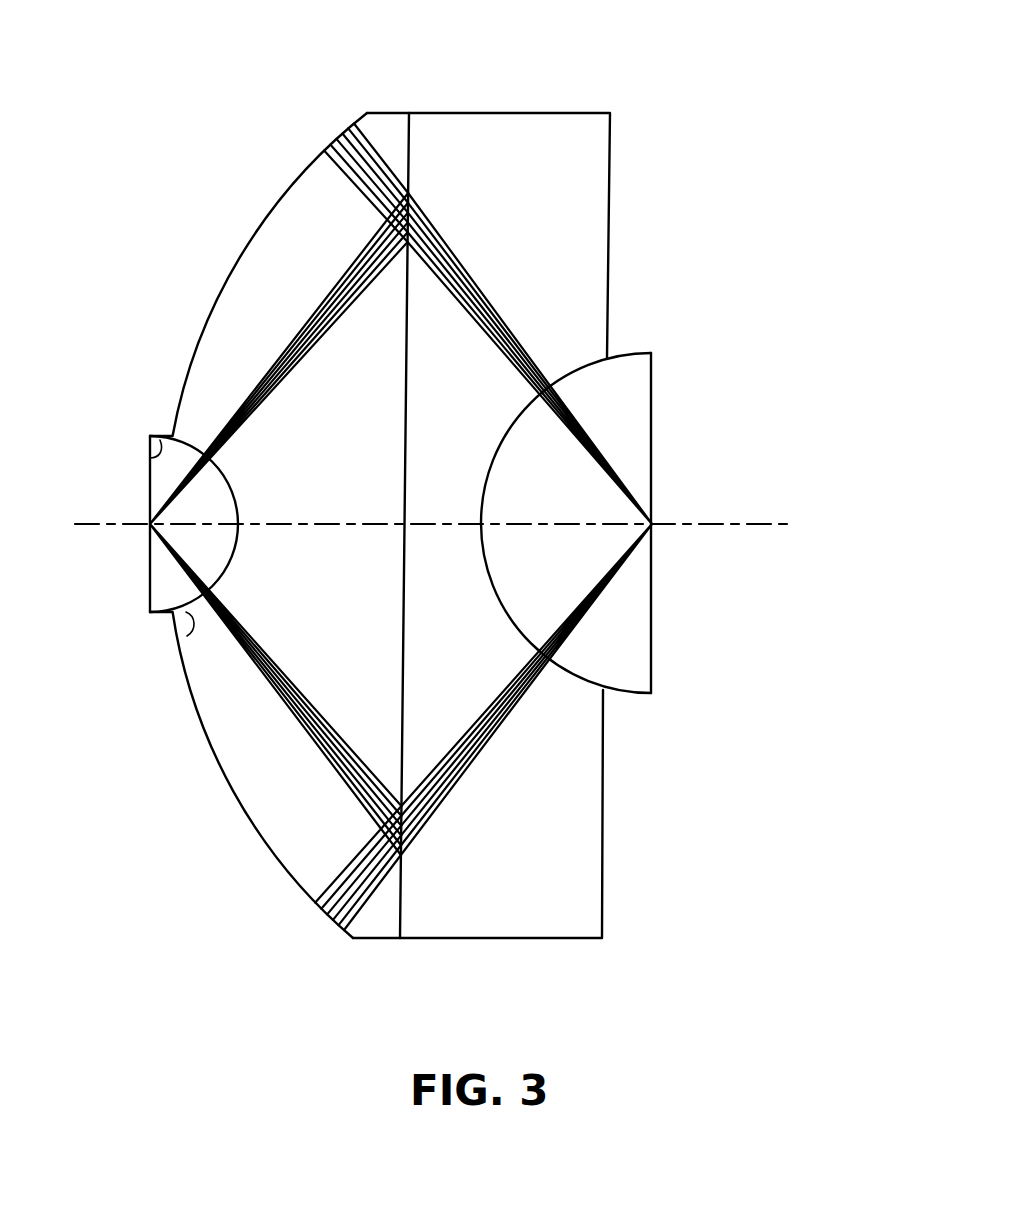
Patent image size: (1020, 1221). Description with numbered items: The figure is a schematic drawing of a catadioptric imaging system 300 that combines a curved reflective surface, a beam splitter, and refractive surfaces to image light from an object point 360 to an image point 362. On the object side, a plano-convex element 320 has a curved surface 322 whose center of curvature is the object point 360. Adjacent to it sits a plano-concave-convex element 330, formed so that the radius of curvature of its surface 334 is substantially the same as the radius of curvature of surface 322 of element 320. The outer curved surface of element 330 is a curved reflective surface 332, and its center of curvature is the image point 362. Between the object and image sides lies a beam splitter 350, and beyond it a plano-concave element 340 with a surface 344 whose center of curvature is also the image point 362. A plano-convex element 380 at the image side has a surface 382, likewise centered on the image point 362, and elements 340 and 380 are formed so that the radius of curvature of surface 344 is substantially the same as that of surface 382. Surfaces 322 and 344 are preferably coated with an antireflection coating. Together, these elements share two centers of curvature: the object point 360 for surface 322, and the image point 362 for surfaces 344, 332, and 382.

The catadioptric imaging system 300 is at (546, 70).
The plano-convex element 320 is at (145, 530).
The surface of element 320 322 is at (150, 459).
The plano-concave-convex element 330 is at (226, 525).
The curved reflective surface 332 is at (222, 291).
The surface of element 330 334 is at (178, 626).
The plano-concave element 340 is at (583, 792).
The beam splitter 350 is at (405, 674).
The object point 360 is at (150, 524).
The image point 362 is at (656, 515).
The plano-convex element 380 is at (613, 525).
The surface of element 380 382 is at (625, 692).
The surface of element 340 344 is at (580, 363).